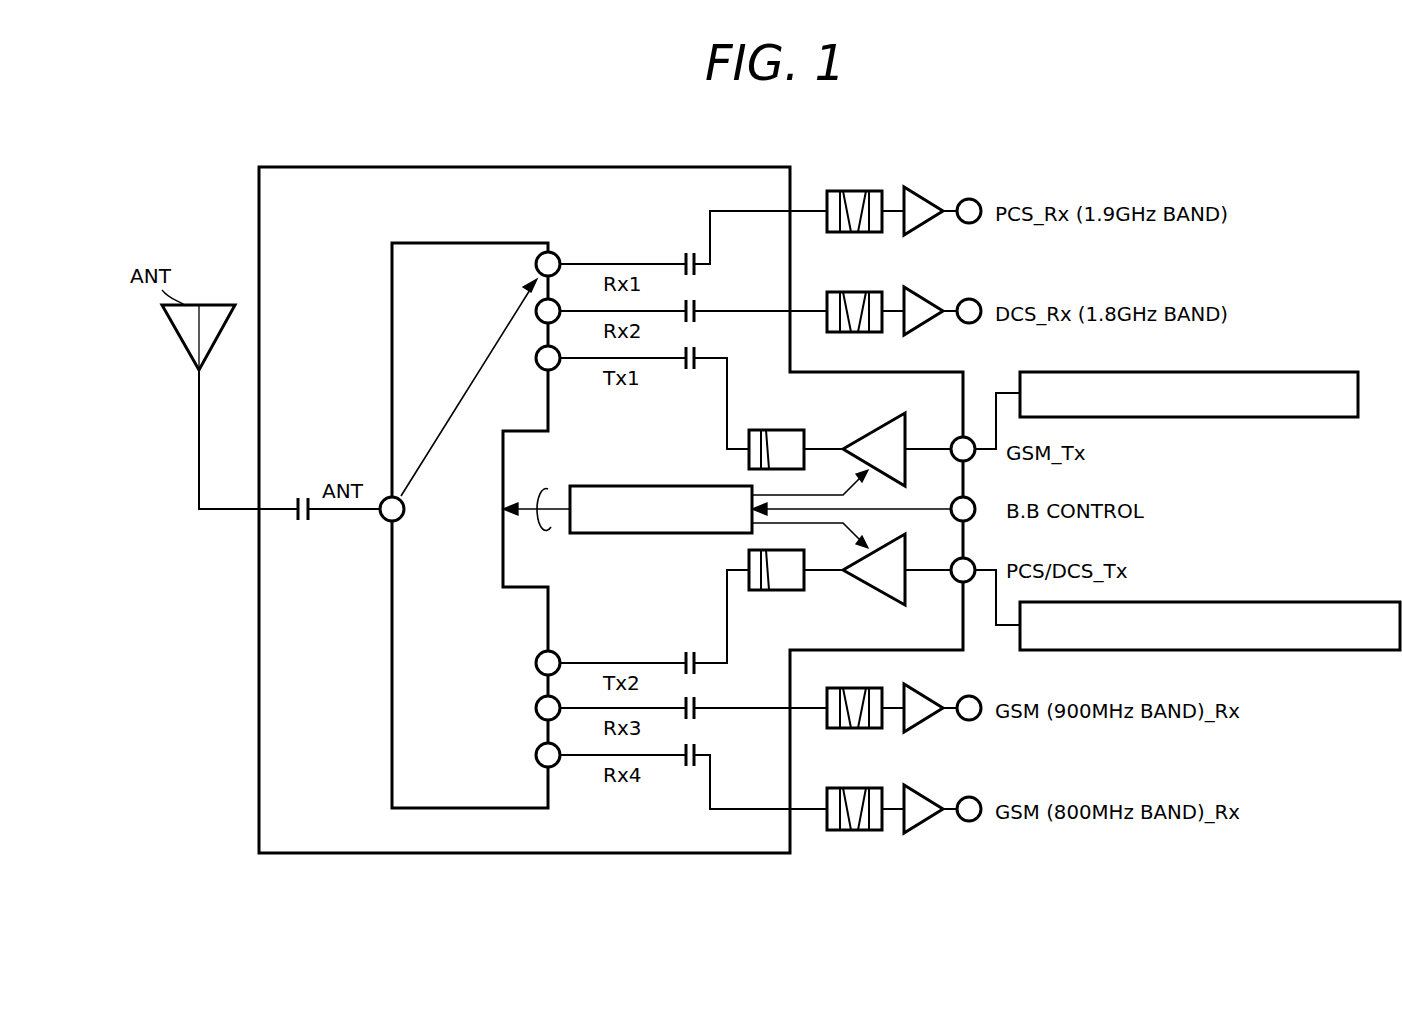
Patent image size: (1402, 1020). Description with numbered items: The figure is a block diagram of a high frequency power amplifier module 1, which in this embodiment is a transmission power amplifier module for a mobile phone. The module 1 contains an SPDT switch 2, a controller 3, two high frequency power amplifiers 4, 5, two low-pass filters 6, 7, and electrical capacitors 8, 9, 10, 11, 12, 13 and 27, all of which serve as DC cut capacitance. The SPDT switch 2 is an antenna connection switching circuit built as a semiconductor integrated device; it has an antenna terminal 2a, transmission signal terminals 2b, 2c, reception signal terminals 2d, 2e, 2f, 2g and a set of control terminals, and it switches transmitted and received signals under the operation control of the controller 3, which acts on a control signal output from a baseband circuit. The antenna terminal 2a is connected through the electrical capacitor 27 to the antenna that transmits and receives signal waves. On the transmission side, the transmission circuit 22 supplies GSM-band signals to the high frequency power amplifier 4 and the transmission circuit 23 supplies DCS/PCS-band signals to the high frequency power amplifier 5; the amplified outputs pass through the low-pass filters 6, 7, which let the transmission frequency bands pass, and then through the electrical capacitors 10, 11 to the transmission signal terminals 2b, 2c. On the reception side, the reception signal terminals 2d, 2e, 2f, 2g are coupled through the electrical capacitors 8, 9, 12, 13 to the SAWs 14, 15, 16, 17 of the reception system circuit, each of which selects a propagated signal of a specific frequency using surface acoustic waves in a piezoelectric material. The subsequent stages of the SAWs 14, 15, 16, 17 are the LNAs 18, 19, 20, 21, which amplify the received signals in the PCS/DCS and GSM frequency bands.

The high frequency power amplifier module 1 is at (259, 197).
The SPDT switch 2 is at (402, 290).
The antenna terminal 2a is at (384, 519).
The transmission signal terminal 2b is at (538, 369).
The transmission signal terminal 2c is at (536, 663).
The reception signal terminal 2d is at (560, 253).
The reception signal terminal 2e is at (537, 320).
The reception signal terminal 2f is at (536, 708).
The reception signal terminal 2g is at (536, 755).
The controller 3 is at (622, 533).
The high frequency power amplifier 4 is at (862, 437).
The high frequency power amplifier 5 is at (870, 588).
The low-pass filter 6 is at (770, 432).
The low-pass filter 7 is at (770, 592).
The electrical capacitor 8 is at (700, 270).
The electrical capacitor 9 is at (700, 317).
The electrical capacitor 10 is at (702, 352).
The electrical capacitor 11 is at (700, 668).
The electrical capacitor 12 is at (700, 713).
The electrical capacitor 13 is at (702, 749).
The SAW 14 is at (848, 191).
The SAW 15 is at (848, 292).
The SAW 16 is at (858, 728).
The SAW 17 is at (858, 830).
The LNA 18 is at (922, 206).
The LNA 19 is at (922, 306).
The LNA 20 is at (925, 703).
The LNA 21 is at (925, 803).
The transmission circuit 22 is at (1275, 372).
The transmission circuit 23 is at (1275, 602).
The electrical capacitor 27 is at (297, 498).